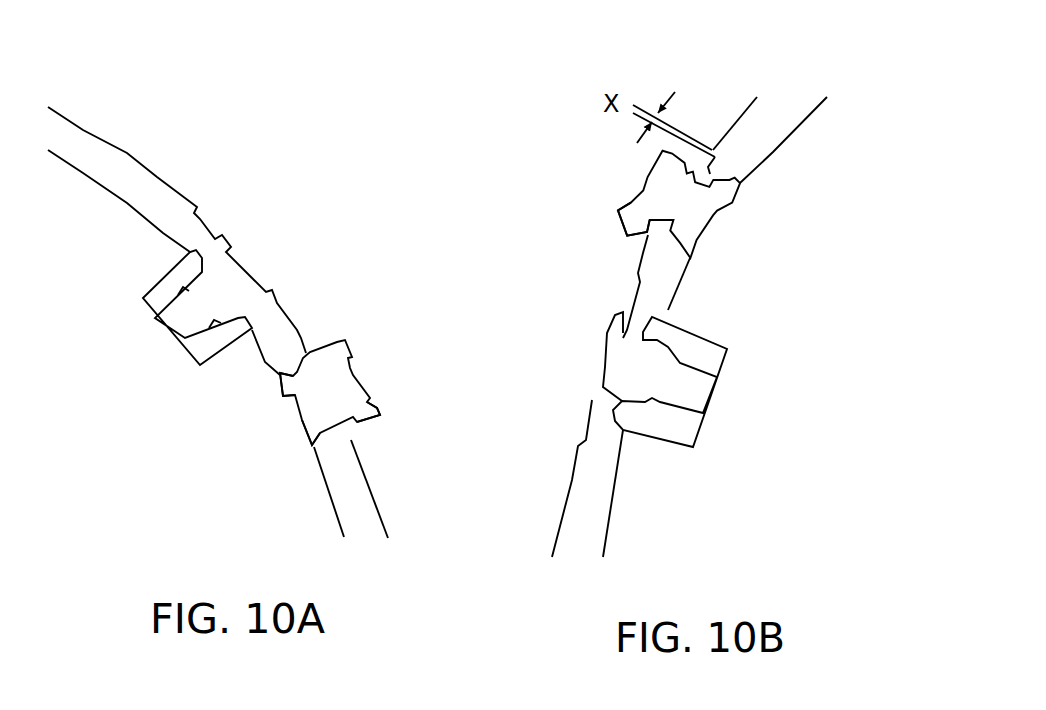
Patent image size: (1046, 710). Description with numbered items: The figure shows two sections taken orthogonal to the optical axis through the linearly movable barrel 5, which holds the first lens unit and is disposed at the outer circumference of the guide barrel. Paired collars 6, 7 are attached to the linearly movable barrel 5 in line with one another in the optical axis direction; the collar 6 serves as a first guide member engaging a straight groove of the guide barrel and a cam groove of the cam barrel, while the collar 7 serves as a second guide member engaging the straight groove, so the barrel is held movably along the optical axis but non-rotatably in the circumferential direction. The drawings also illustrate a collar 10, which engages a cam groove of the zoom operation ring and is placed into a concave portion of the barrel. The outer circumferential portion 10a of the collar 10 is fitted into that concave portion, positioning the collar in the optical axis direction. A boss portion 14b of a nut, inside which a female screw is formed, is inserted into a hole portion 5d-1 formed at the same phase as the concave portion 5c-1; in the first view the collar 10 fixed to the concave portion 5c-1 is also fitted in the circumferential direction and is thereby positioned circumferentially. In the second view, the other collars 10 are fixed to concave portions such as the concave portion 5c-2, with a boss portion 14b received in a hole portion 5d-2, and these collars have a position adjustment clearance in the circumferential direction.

In FIG. 10A, the linearly movable barrel 5 is at (142, 180).
In FIG. 10B, the linearly movable barrel 5 is at (585, 493).
In FIG. 10A, the collar 6 is at (176, 336).
In FIG. 10B, the collar 6 is at (706, 379).
In FIG. 10A, the collar 7 is at (150, 335).
In FIG. 10B, the collar 7 is at (722, 405).
In FIG. 10A, the collar 10 is at (366, 378).
In FIG. 10B, the collar 10 is at (638, 173).
In FIG. 10A, the outer circumferential portion 10a is at (363, 432).
In FIG. 10B, the outer circumferential portion 10a is at (693, 147).
In FIG. 10A, the boss portion 14b is at (336, 317).
In FIG. 10B, the boss portion 14b is at (559, 269).
In FIG. 10A, the hole portion 5d-1 is at (297, 377).
In FIG. 10A, the concave portion 5c-1 is at (347, 440).
In FIG. 10B, the hole portion 5d-2 is at (559, 269).
In FIG. 10B, the concave portion 5c-2 is at (764, 153).